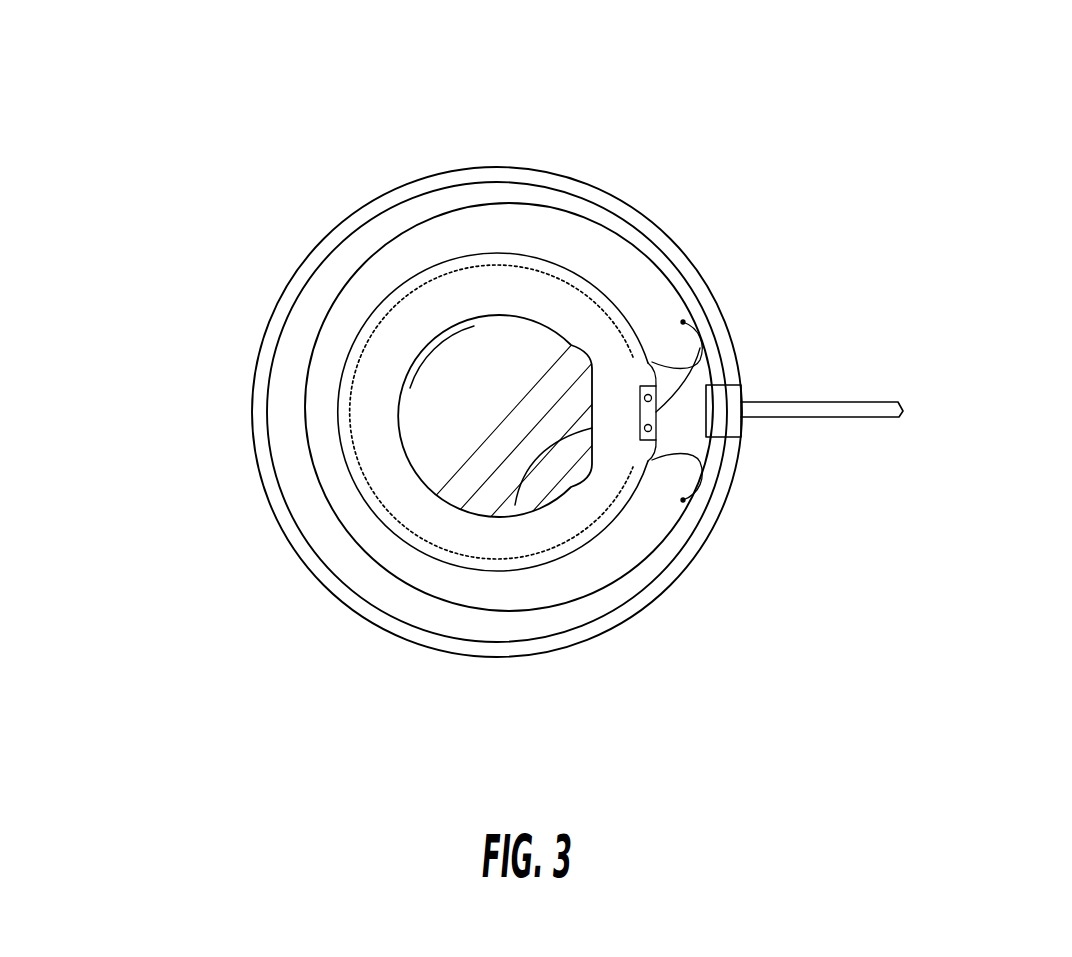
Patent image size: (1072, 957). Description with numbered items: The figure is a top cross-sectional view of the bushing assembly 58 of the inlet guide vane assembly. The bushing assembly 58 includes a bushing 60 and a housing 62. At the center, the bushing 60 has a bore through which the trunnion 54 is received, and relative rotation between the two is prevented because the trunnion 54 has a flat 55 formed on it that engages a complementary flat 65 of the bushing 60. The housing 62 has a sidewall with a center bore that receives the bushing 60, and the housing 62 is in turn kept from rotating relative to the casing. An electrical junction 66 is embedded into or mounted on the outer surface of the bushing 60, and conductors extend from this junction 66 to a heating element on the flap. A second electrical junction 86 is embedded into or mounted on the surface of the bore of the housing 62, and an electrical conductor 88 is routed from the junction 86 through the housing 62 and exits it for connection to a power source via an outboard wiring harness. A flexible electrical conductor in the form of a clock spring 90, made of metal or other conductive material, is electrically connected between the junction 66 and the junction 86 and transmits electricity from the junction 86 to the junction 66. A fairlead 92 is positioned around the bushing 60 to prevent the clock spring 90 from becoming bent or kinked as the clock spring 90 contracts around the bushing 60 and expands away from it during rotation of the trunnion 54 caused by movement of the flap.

The trunnion 54 is at (510, 340).
The flat 55 is at (516, 505).
The bushing assembly 58 is at (946, 145).
The bushing 60 is at (390, 478).
The housing 62 is at (674, 583).
The complementary flat 65 is at (601, 386).
The electrical junction 66 is at (657, 417).
The electrical junction 86 is at (723, 405).
The electrical conductor 88 is at (822, 408).
The clock spring 90 is at (352, 547).
The fairlead 92 is at (381, 317).